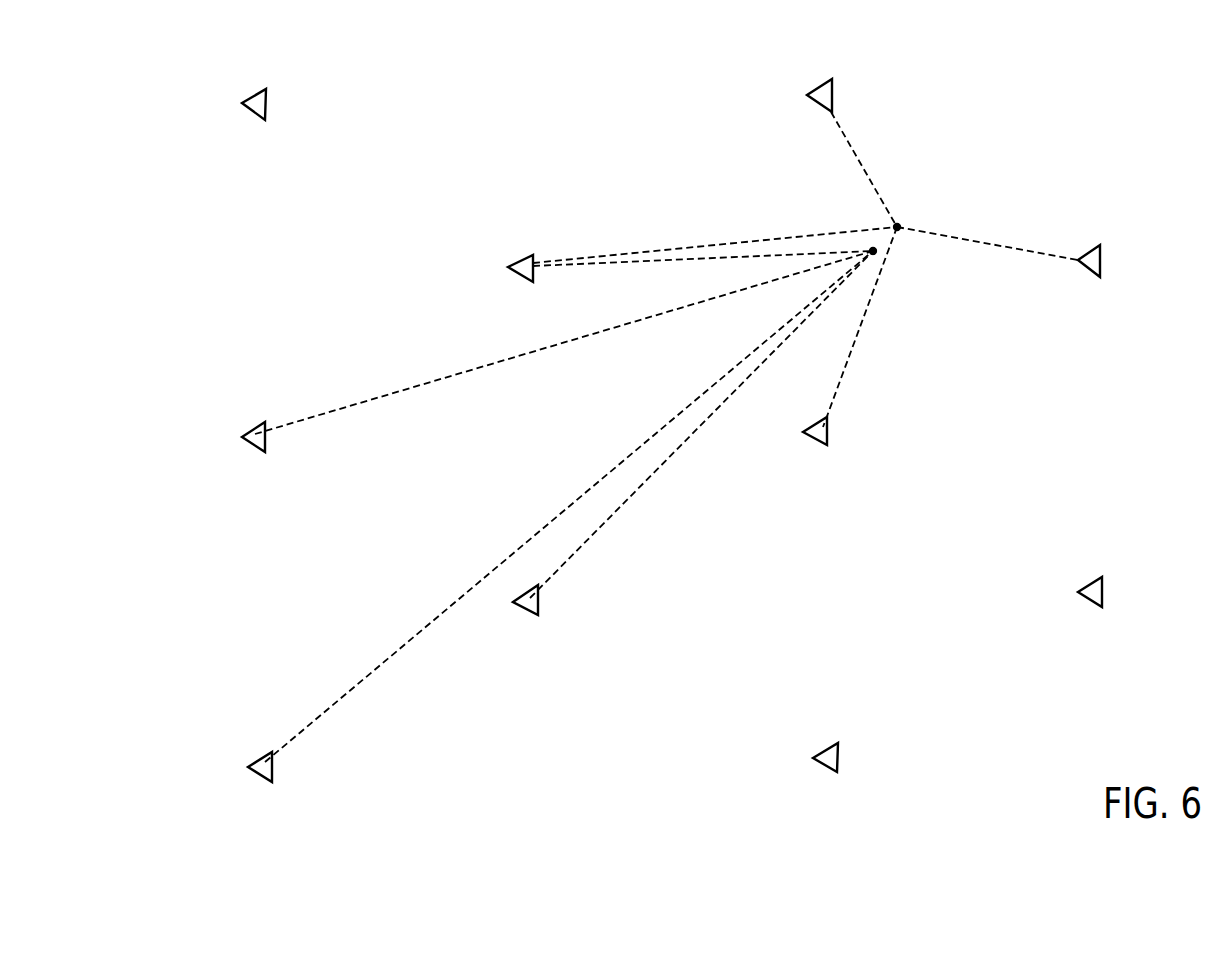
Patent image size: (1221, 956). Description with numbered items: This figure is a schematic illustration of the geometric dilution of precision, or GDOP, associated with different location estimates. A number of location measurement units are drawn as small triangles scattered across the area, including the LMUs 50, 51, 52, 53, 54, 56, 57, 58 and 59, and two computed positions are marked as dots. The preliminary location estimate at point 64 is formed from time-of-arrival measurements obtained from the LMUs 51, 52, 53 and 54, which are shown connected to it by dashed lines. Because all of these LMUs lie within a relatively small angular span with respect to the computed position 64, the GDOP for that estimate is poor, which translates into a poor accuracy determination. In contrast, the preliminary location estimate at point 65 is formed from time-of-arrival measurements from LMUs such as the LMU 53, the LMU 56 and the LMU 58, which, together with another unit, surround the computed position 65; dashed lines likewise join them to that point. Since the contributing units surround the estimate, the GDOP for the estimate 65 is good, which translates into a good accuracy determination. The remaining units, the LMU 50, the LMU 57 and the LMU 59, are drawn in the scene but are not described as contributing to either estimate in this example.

The LMU 50 is at (268, 87).
The LMU 51 is at (267, 420).
The LMU 52 is at (273, 780).
The LMU 53 is at (535, 252).
The LMU 54 is at (539, 613).
The LMU 56 is at (828, 443).
The LMU 57 is at (838, 770).
The LMU 58 is at (1100, 247).
The LMU 59 is at (1098, 580).
The preliminary location estimate 64 is at (877, 256).
The preliminary location estimate 65 is at (893, 223).